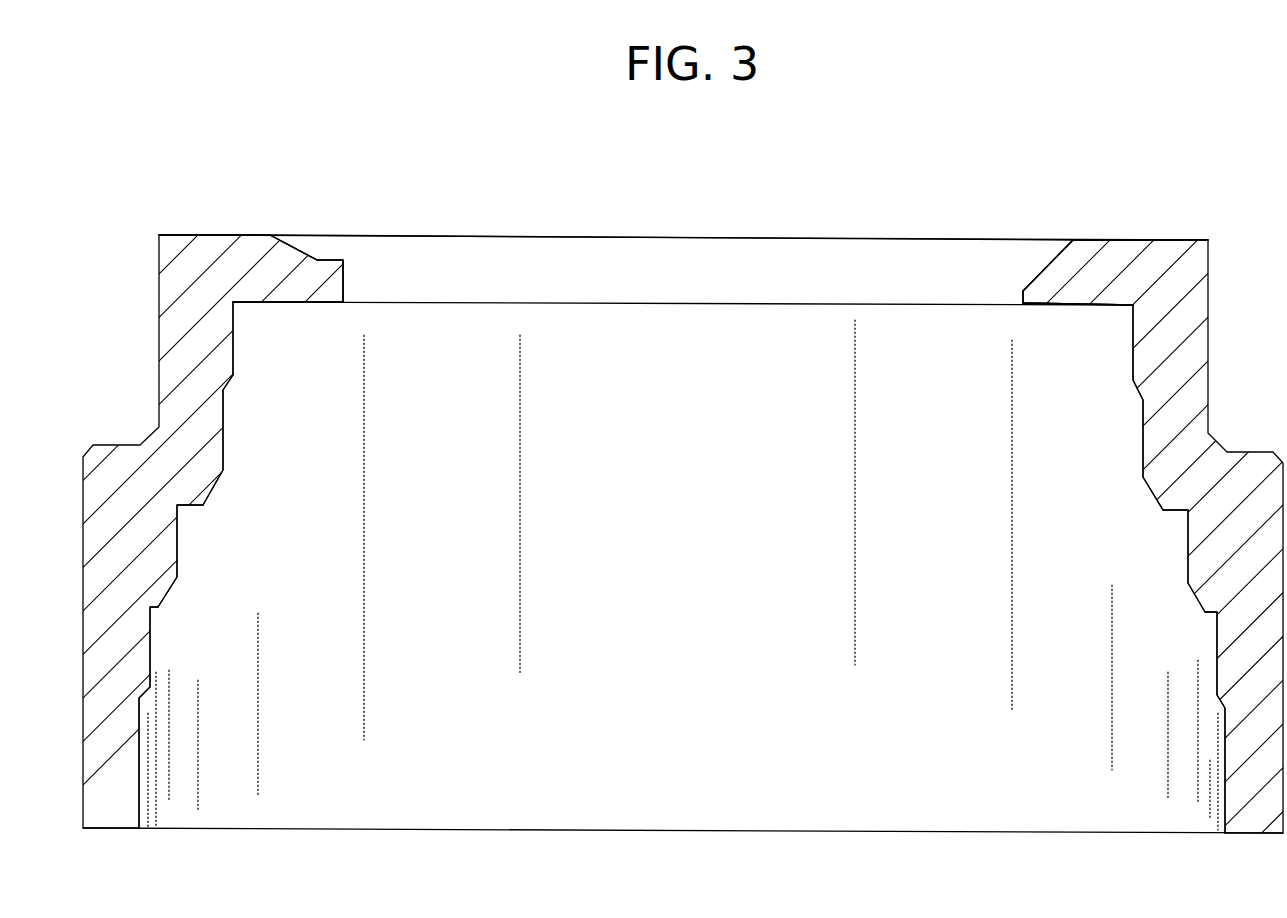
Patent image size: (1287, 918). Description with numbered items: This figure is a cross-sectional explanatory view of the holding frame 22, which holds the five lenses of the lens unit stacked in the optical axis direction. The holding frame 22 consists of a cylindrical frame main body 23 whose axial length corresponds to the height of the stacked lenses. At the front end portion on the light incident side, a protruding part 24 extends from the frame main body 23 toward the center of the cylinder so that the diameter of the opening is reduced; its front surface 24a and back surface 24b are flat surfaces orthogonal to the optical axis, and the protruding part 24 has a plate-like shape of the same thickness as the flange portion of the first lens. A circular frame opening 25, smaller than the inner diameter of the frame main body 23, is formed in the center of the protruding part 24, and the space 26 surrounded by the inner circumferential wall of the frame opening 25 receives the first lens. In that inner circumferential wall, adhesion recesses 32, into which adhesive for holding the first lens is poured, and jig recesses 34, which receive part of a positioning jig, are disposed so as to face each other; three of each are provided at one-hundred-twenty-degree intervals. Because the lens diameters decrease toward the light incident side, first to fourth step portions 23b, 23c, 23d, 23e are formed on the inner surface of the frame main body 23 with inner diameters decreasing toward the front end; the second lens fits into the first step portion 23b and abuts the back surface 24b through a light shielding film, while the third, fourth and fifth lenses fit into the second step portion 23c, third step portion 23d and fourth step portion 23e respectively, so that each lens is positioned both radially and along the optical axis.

The holding frame 22 is at (913, 165).
The frame main body 23 is at (172, 377).
The first step portion 23b is at (237, 365).
The second step portion 23c is at (227, 438).
The third step portion 23d is at (180, 537).
The fourth step portion 23e is at (152, 643).
The protruding part 24 is at (257, 228).
The front surface 24a is at (215, 235).
The back surface 24b is at (275, 303).
The frame opening 25 is at (343, 283).
The space 26 is at (706, 232).
The adhesion recess 32 is at (300, 255).
The jig recess 34 is at (1039, 275).